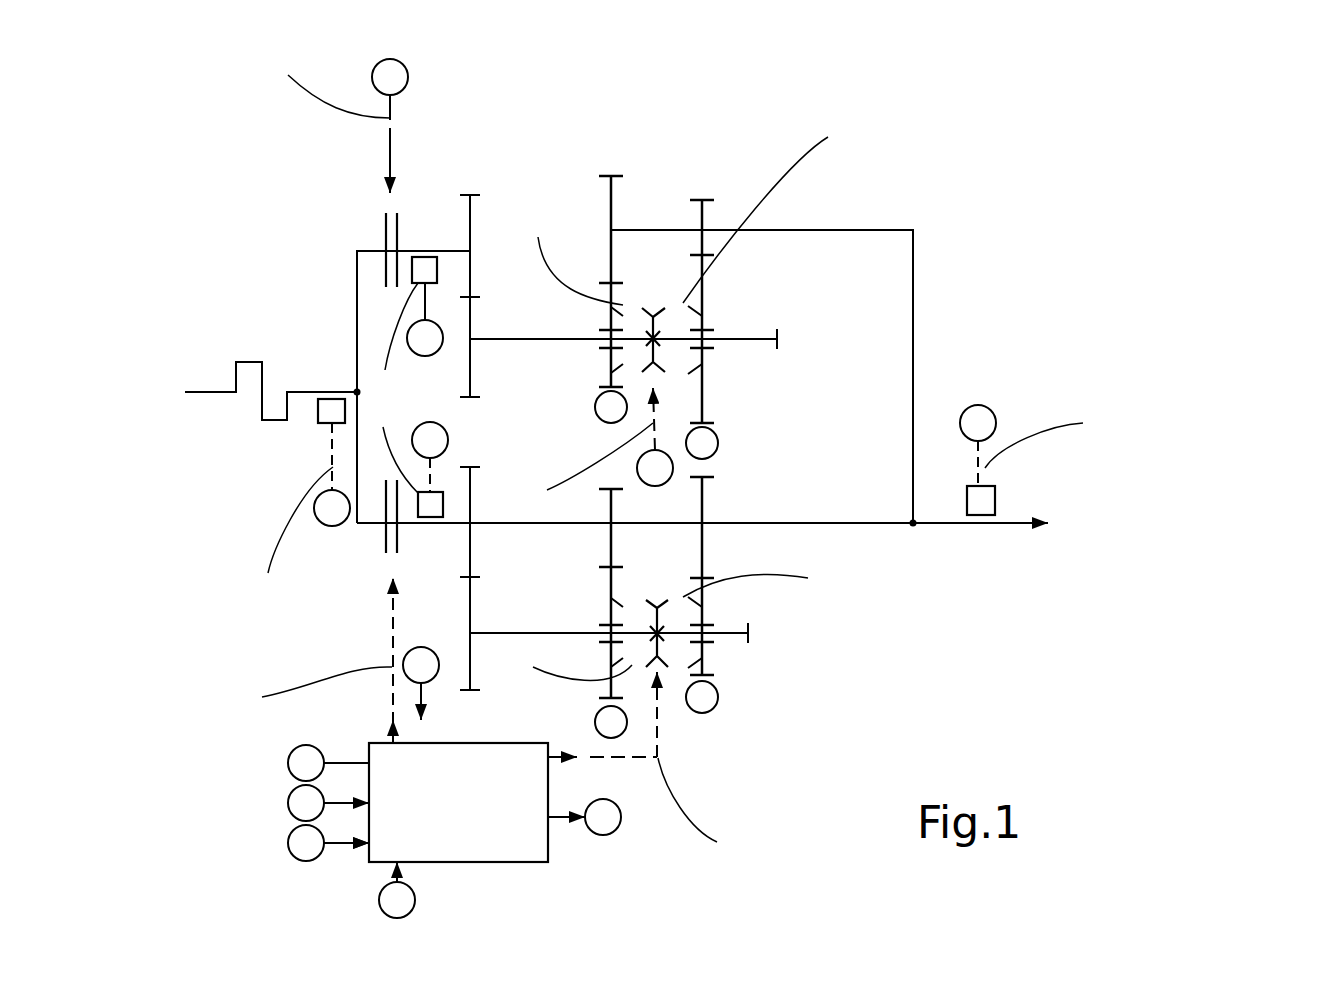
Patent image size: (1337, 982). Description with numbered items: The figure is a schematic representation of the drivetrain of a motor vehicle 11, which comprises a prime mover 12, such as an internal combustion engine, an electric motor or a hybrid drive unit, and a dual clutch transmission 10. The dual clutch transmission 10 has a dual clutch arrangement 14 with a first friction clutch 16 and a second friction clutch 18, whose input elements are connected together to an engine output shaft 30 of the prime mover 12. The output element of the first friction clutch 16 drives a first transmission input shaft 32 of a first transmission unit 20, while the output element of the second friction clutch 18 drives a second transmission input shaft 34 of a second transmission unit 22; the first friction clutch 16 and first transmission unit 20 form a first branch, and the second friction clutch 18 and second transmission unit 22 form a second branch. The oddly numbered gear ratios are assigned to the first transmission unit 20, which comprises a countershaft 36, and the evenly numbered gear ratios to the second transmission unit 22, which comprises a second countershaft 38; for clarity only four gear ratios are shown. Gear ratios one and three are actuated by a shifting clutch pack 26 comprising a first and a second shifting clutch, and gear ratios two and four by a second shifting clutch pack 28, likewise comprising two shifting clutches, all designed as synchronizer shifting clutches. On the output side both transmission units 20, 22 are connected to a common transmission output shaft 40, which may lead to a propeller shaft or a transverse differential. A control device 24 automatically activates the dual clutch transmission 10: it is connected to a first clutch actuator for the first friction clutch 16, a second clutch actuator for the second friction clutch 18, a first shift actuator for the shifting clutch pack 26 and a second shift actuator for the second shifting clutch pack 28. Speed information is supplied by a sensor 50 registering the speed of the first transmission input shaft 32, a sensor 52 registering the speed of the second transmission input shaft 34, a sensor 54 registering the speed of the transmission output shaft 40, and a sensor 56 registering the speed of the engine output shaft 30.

The dual clutch transmission 10 is at (1015, 188).
The motor vehicle 11 is at (1143, 223).
The prime mover 12 is at (247, 362).
The dual clutch arrangement 14 is at (430, 140).
The first friction clutch 16 is at (383, 237).
The second friction clutch 18 is at (383, 542).
The first transmission unit 20 is at (657, 180).
The second transmission unit 22 is at (787, 633).
The control device 24 is at (513, 863).
The shifting clutch pack 26 is at (653, 303).
The second shifting clutch pack 28 is at (675, 673).
The engine output shaft 30 is at (305, 393).
The first transmission input shaft 32 is at (420, 251).
The second transmission input shaft 34 is at (430, 518).
The countershaft 36 is at (738, 340).
The second countershaft 38 is at (782, 522).
The transmission output shaft 40 is at (947, 523).
The sensor 50 is at (418, 280).
The sensor 52 is at (430, 505).
The sensor 54 is at (980, 503).
The sensor 56 is at (327, 422).